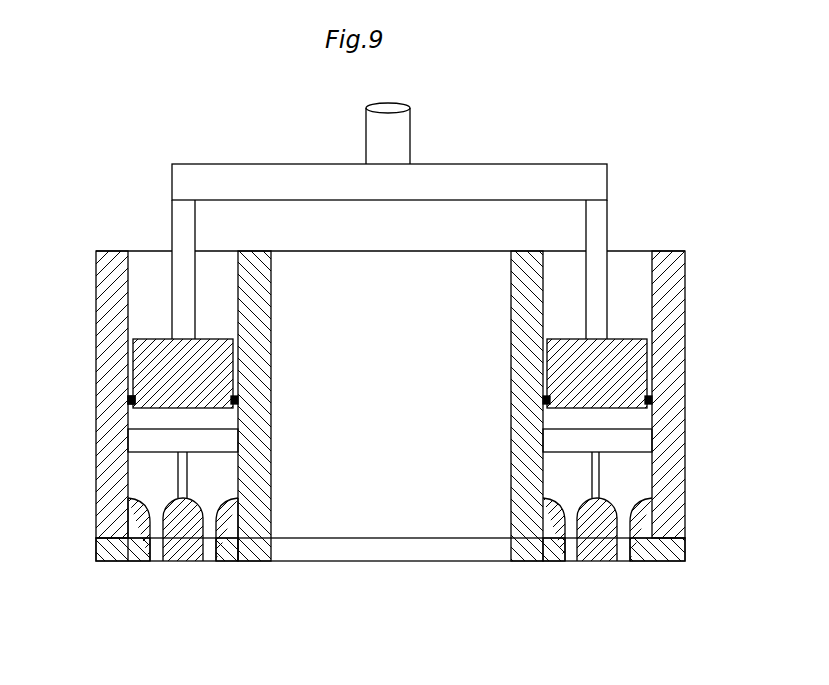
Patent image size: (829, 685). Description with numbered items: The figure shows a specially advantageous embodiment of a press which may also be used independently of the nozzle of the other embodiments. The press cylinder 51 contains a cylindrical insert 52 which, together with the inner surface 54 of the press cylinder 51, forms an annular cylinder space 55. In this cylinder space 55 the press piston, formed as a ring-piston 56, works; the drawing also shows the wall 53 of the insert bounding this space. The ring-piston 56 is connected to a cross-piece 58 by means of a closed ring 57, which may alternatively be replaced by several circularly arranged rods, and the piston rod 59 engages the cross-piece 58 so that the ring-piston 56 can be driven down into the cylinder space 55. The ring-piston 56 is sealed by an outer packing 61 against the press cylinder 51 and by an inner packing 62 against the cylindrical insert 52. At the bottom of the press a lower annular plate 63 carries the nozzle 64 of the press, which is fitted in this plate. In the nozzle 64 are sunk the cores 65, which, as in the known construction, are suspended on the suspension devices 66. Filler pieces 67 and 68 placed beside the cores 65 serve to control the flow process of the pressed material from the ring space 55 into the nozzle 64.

The press cylinder 51 is at (685, 297).
The cylindrical insert 52 is at (518, 339).
The inner cylinder wall 53 is at (238, 297).
The inner surface of the press cylinder 54 is at (130, 316).
The cylinder space 55 is at (187, 408).
The ring-piston 56 is at (228, 352).
The closed ring 57 is at (196, 234).
The cross-piece 58 is at (508, 166).
The piston rod 59 is at (402, 131).
The outer packing 61 is at (130, 400).
The inner packing 62 is at (240, 399).
The lower annular plate 63 is at (148, 578).
The nozzle 64 is at (602, 570).
The cores 65 is at (185, 556).
The suspension devices 66 is at (228, 440).
The filler piece 67 is at (235, 526).
The filler piece 68 is at (130, 518).